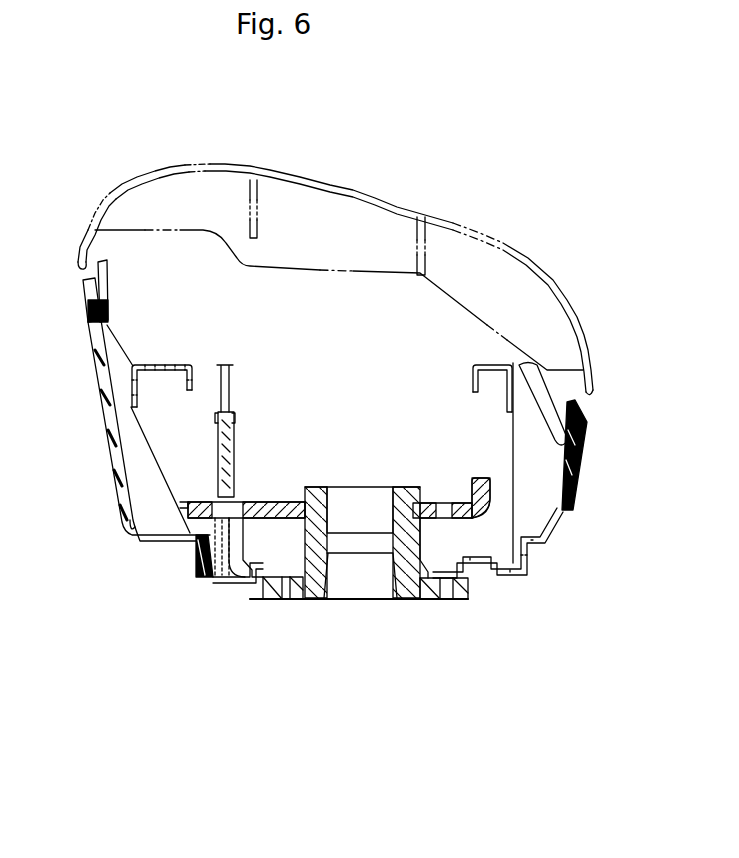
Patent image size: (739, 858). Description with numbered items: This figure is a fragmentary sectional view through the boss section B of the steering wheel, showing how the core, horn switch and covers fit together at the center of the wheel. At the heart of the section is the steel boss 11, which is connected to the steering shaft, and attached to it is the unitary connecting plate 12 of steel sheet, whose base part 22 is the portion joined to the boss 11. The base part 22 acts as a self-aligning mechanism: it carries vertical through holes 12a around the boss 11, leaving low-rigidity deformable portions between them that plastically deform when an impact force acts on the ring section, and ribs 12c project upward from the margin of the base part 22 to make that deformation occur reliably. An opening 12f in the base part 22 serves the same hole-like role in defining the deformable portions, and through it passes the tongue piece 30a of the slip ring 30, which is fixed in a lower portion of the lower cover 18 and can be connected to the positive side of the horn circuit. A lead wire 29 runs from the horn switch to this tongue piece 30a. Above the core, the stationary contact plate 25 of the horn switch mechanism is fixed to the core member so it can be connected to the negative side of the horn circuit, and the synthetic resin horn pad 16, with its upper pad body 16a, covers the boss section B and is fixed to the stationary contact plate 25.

The boss 11 is at (413, 590).
The connecting plate 12 is at (413, 471).
The base part 22 is at (242, 510).
The through hole 12a is at (450, 510).
The rib 12c is at (490, 490).
The opening 12f is at (238, 497).
The horn pad 16 is at (335, 253).
The pad body 16a is at (405, 206).
The lower cover 18 is at (128, 542).
The stationary contact plate 25 is at (165, 365).
The lead wire 29 is at (230, 398).
The slip ring 30 is at (237, 580).
The tongue piece 30a is at (217, 495).
The boss section B is at (452, 640).